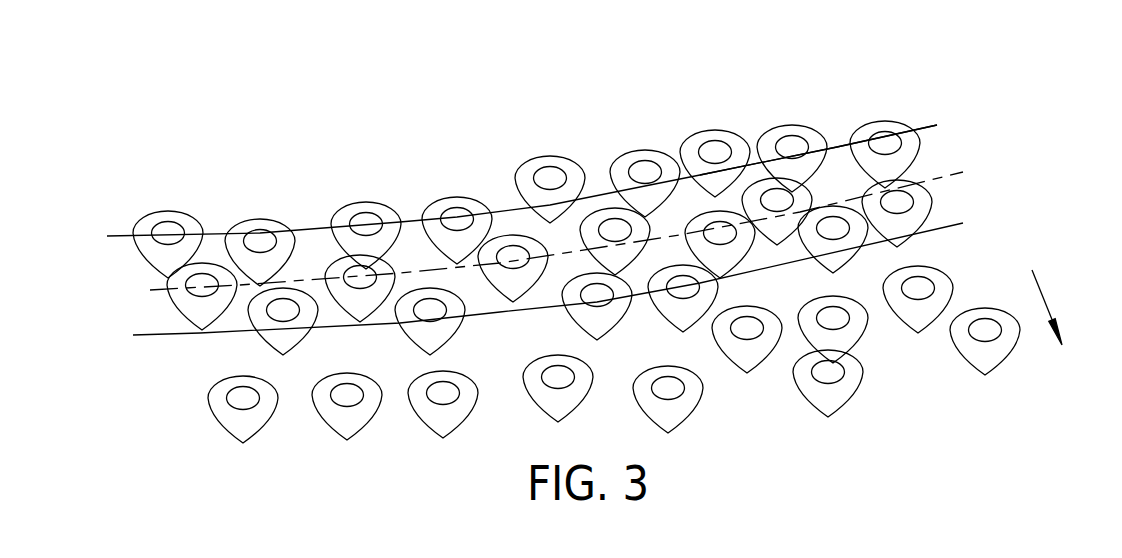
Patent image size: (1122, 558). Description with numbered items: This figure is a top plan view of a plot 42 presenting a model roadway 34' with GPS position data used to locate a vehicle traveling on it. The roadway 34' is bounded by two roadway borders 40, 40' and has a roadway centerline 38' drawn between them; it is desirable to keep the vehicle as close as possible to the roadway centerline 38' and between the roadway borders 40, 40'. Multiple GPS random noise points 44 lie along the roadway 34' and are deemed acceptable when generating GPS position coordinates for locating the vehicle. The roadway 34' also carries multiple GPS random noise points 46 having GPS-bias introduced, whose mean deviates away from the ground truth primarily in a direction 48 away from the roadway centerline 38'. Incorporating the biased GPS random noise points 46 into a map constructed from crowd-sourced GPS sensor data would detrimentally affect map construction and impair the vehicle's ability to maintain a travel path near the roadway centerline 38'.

The roadway 34' is at (563, 175).
The roadway centerline 38' is at (580, 231).
The roadway border 40 is at (573, 279).
The roadway border 40' is at (818, 121).
The plot 42 is at (939, 78).
The GPS random noise points 44 is at (174, 282).
The GPS random noise points having GPS-bias introduced 46 is at (333, 418).
The direction 48 is at (1040, 287).